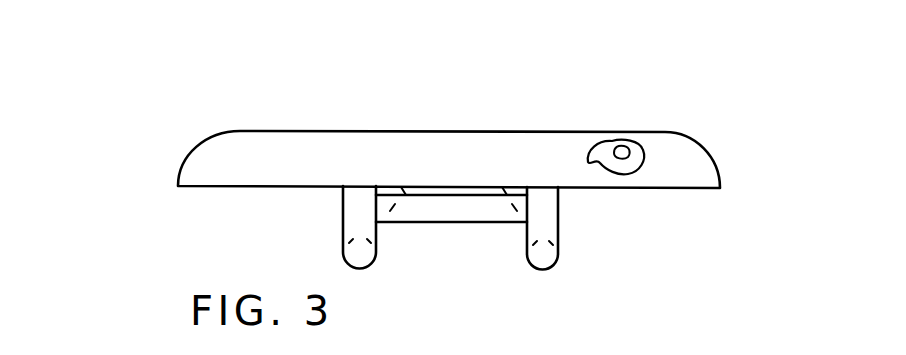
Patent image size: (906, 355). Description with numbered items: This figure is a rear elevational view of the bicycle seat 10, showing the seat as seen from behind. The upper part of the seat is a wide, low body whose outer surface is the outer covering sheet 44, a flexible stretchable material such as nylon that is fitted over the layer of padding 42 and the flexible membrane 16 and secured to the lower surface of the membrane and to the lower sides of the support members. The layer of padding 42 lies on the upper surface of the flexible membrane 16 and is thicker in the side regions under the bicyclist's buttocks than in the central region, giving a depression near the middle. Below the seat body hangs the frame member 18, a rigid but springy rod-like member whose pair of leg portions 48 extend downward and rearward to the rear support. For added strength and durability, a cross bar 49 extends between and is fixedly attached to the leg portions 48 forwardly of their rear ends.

The bicycle seat 10 is at (718, 116).
The flexible membrane 16 is at (622, 149).
The frame member 18 is at (570, 239).
The layer of padding 42 is at (597, 153).
The outer covering sheet 44 is at (284, 143).
The leg portions 48 is at (344, 216).
The cross bar 49 is at (422, 212).